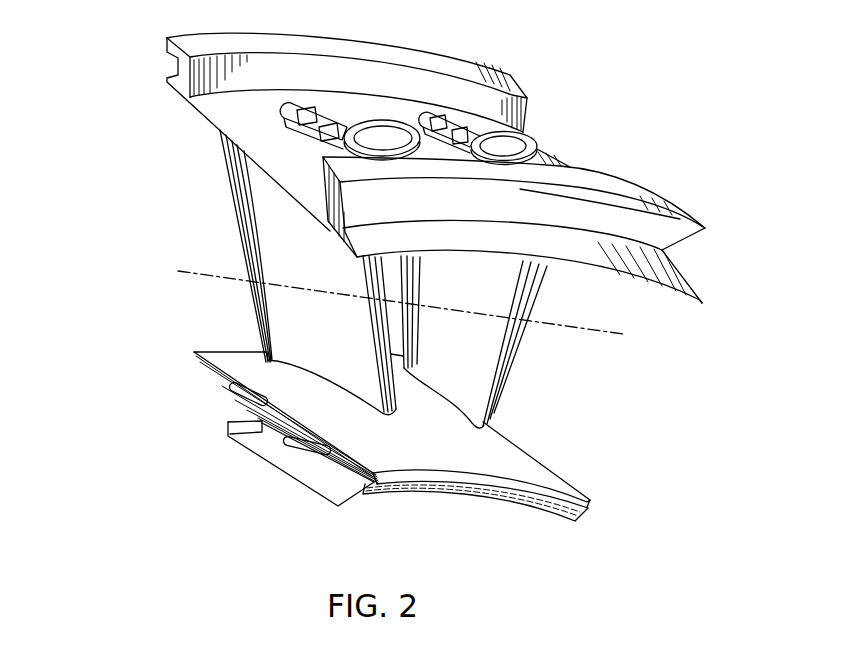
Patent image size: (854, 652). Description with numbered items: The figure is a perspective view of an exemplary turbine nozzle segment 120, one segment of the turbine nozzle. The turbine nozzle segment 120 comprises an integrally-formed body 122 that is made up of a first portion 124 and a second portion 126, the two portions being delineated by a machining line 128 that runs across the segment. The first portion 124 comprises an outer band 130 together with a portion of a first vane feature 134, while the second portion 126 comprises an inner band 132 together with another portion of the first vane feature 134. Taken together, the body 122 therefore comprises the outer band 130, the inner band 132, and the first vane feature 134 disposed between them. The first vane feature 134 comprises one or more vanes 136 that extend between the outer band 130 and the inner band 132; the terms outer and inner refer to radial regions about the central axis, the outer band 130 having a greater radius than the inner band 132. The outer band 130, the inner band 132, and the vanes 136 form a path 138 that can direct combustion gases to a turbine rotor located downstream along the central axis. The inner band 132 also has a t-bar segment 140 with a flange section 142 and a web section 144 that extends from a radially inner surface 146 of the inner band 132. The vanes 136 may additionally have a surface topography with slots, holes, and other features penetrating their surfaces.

The turbine nozzle segment 120 is at (584, 68).
The body 122 is at (77, 67).
The first portion 124 is at (152, 45).
The second portion 126 is at (193, 439).
The machining line 128 is at (178, 271).
The outer band 130 is at (700, 250).
The inner band 132 is at (540, 457).
The first vane feature 134 is at (490, 432).
The vanes 136 is at (333, 333).
The path 138 is at (614, 305).
The t-bar segment 140 is at (333, 520).
The flange section 142 is at (228, 423).
The web section 144 is at (262, 416).
The radially inner surface 146 is at (343, 470).